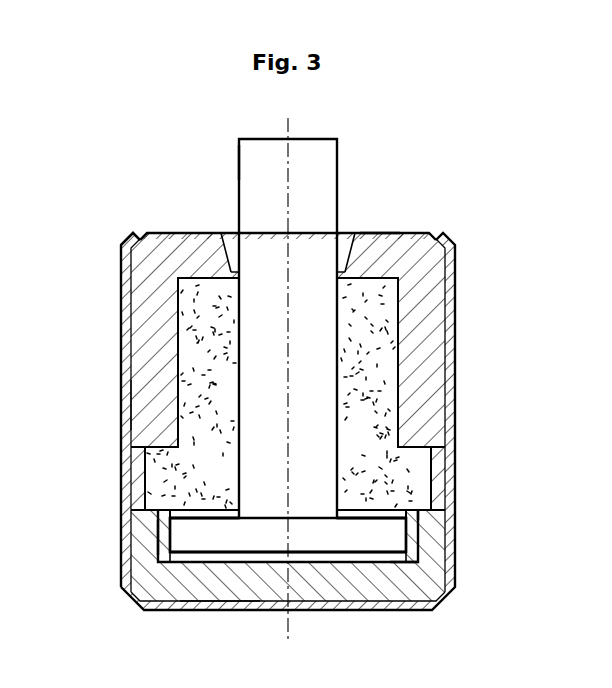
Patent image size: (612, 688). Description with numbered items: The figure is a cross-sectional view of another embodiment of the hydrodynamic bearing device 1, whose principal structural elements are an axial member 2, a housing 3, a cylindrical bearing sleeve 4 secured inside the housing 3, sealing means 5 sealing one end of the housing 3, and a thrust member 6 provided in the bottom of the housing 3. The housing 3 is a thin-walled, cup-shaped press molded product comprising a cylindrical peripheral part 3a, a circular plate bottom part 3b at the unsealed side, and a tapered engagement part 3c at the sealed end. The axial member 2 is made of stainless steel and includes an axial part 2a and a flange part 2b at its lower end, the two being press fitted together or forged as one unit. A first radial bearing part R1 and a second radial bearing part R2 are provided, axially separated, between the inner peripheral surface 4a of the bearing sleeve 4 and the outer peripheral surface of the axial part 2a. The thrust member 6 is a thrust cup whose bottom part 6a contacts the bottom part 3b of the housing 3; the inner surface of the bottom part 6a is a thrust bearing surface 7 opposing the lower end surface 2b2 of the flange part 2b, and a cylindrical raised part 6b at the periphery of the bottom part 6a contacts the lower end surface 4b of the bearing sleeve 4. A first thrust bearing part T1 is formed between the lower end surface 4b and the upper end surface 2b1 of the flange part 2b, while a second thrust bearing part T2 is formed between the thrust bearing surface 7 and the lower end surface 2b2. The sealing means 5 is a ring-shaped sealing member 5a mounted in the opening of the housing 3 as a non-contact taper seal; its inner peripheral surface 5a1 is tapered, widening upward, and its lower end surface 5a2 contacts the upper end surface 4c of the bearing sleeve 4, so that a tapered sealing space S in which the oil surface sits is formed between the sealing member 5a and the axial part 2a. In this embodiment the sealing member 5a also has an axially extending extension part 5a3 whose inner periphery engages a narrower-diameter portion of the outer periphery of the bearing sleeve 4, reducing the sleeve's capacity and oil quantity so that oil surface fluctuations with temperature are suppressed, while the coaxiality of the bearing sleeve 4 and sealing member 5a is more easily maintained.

The hydrodynamic bearing device 1 is at (470, 188).
The axial member 2 is at (321, 132).
The axial part 2a is at (242, 162).
The flange part 2b is at (248, 547).
The upper end surface of the flange part 2b1 is at (176, 511).
The lower end surface of the flange part 2b2 is at (210, 565).
The housing 3 is at (458, 380).
The cylindrical peripheral part 3a is at (130, 405).
The bottom part of the housing 3b is at (312, 612).
The tapered engagement part 3c is at (130, 233).
The bearing sleeve 4 is at (385, 353).
The inner peripheral surface of the bearing sleeve 4a is at (245, 300).
The lower end surface of the bearing sleeve 4b is at (368, 512).
The upper end surface of the bearing sleeve 4c is at (385, 268).
The sealing means 5 is at (408, 230).
The sealing member 5a is at (376, 231).
The inner peripheral surface of the sealing member 5a1 is at (227, 250).
The lower end surface of the sealing member 5a2 is at (176, 283).
The extension part 5a3 is at (150, 374).
The thrust member 6 is at (441, 567).
The bottom part of the thrust member 6a is at (215, 613).
The cylindrical raised part 6b is at (150, 543).
The thrust bearing surface 7 is at (313, 563).
The sealing space S is at (344, 250).
The first radial bearing part R1 is at (236, 346).
The second radial bearing part R2 is at (236, 466).
The first thrust bearing part T1 is at (396, 508).
The second thrust bearing part T2 is at (399, 564).